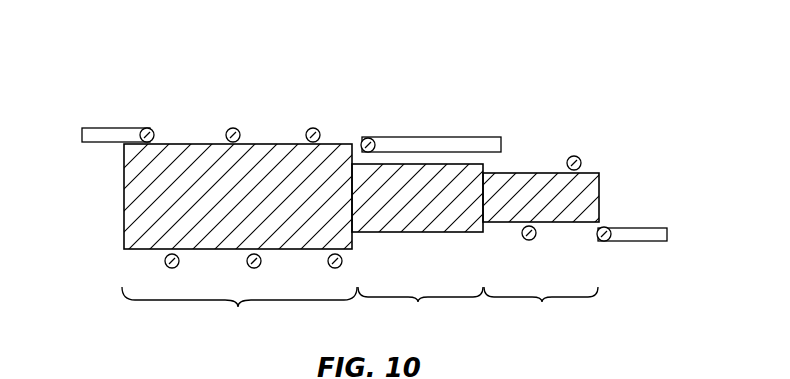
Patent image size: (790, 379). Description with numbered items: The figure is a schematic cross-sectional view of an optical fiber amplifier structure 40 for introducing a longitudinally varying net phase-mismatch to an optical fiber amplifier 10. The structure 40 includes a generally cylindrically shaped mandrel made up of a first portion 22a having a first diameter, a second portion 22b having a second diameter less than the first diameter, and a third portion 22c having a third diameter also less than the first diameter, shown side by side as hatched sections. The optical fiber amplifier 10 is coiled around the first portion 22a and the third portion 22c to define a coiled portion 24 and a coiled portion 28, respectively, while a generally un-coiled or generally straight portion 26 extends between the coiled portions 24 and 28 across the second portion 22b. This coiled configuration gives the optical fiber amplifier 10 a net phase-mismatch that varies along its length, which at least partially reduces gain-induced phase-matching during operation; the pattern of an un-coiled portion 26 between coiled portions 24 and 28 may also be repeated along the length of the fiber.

The optical fiber amplifier 10 is at (107, 135).
The first portion 22a is at (147, 198).
The second portion 22b is at (400, 200).
The third portion 22c is at (590, 200).
The coiled portion 24 is at (239, 309).
The un-coiled portion 26 is at (420, 305).
The coiled portion 28 is at (541, 305).
The optical fiber amplifier structure 40 is at (583, 87).